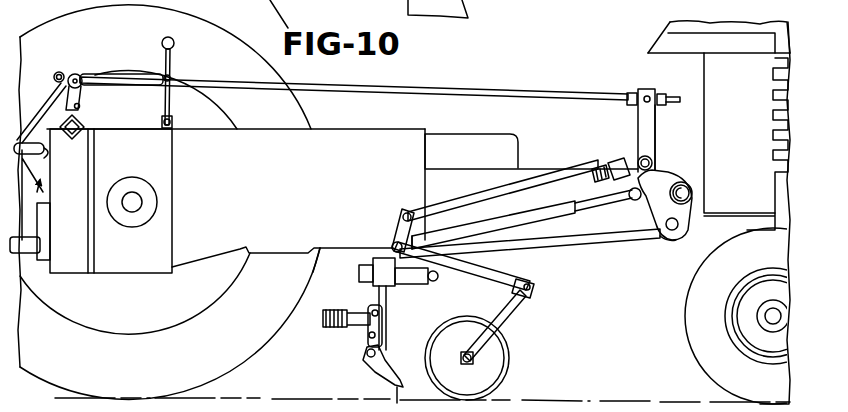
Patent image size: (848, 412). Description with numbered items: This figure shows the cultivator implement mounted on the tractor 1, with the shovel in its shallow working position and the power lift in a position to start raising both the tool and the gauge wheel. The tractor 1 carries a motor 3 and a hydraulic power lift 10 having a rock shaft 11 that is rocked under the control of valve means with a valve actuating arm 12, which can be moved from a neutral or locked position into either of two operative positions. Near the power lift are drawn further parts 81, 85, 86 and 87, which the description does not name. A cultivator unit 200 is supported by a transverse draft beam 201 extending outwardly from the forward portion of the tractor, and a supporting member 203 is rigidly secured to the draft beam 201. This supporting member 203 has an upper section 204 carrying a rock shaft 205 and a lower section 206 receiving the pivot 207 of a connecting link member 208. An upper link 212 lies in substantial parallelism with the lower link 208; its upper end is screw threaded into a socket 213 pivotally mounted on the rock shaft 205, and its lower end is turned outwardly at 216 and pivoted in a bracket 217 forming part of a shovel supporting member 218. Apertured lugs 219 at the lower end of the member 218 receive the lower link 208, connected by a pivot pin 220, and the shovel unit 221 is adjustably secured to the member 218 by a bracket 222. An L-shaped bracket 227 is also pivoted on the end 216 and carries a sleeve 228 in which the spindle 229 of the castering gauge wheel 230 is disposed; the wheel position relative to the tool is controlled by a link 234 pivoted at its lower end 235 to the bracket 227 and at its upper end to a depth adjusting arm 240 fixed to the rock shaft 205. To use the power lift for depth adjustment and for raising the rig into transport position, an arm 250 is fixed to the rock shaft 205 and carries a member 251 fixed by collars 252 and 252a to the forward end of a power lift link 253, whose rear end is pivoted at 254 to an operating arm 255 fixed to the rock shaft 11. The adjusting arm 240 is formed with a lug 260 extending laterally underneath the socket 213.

The tractor 1 is at (289, 270).
The motor 3 is at (488, 141).
The power lift 10 is at (45, 194).
The rock shaft 11 is at (88, 136).
The valve actuating arm 12 is at (40, 158).
The control lever 81 is at (172, 60).
The guide plate 85 is at (136, 76).
The pivot pin 86 is at (59, 72).
The strut 87 is at (38, 114).
The cultivator unit 200 is at (568, 270).
The transverse draft beam 201 is at (688, 193).
The supporting member 203 is at (672, 168).
The upper section 204 is at (699, 136).
The rock shaft 205 is at (652, 150).
The lower section 206 is at (673, 234).
The pivot 207 is at (679, 225).
The connecting link member 208 is at (613, 240).
The upper link 212 is at (497, 205).
The socket 213 is at (628, 160).
The outwardly turned end 216 is at (407, 210).
The bracket 217 is at (414, 235).
The shovel supporting member 218 is at (403, 284).
The apertured lugs 219 is at (436, 283).
The pivot pin 220 is at (440, 278).
The shovel unit 221 is at (408, 371).
The bracket 222 is at (362, 270).
The L-shaped bracket 227 is at (453, 268).
The sleeve 228 is at (512, 296).
The spindle 229 is at (513, 313).
The castering gauge wheel 230 is at (495, 360).
The link 234 is at (545, 212).
The lower end pivot 235 is at (392, 246).
The depth adjusting arm 240 is at (623, 216).
The arm 250 is at (644, 126).
The member 251 is at (630, 102).
The collar 252 is at (631, 92).
The collar 252a is at (660, 93).
The power lift link 253 is at (417, 91).
The pivot 254 is at (77, 74).
The operating arm 255 is at (80, 107).
The lug 260 is at (602, 170).